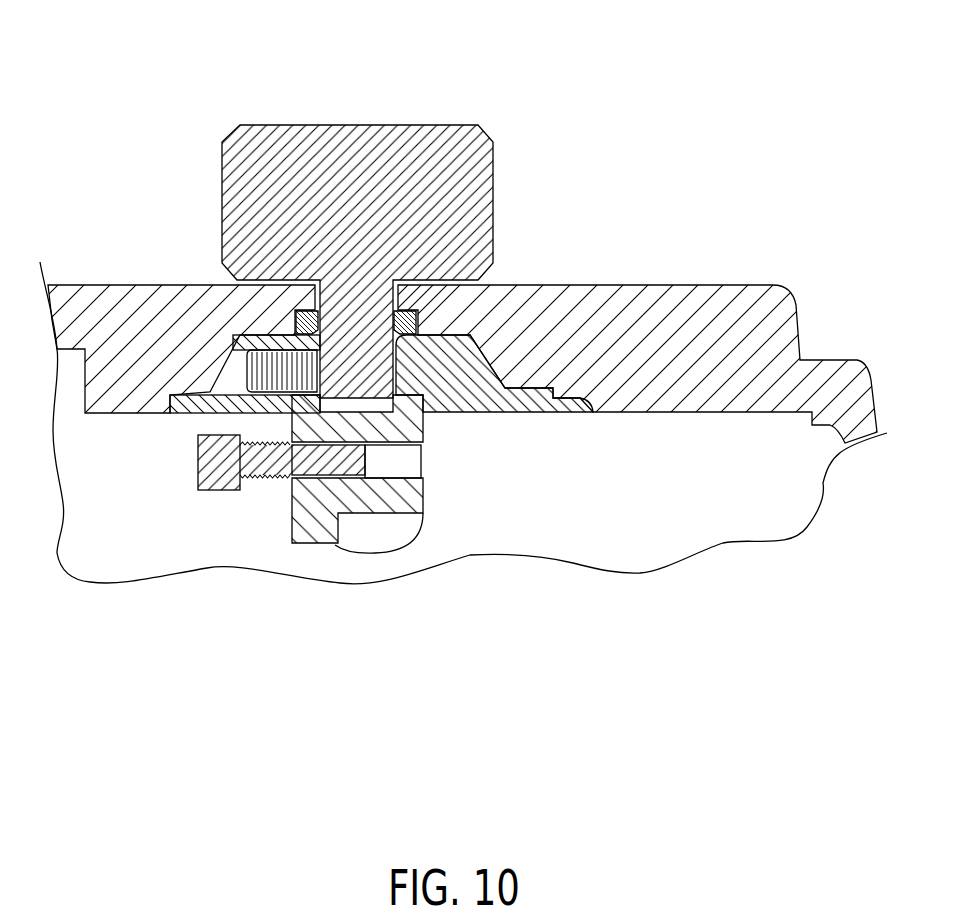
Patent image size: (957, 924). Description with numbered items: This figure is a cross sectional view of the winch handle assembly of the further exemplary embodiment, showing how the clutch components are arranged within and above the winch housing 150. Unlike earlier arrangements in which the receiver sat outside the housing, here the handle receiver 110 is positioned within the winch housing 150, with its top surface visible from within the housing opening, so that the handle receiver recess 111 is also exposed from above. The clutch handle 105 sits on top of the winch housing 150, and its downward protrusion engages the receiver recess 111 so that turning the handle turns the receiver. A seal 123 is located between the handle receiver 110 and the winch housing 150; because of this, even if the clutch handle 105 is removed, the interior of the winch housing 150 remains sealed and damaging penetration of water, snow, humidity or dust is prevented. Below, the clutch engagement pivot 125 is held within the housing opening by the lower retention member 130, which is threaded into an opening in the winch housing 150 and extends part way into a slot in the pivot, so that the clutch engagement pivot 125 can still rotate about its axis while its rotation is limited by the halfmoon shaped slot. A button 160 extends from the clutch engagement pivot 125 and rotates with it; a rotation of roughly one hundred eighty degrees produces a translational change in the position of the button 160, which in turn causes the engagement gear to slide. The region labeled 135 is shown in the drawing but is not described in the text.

The clutch handle 105 is at (495, 187).
The handle receiver 110 is at (490, 358).
The handle receiver recess 111 is at (247, 373).
The seal 123 is at (303, 312).
The clutch engagement pivot 125 is at (377, 505).
The lower retention member 130 is at (220, 463).
The cavity 135 is at (407, 463).
The winch housing 150 is at (788, 295).
The button 160 is at (307, 535).